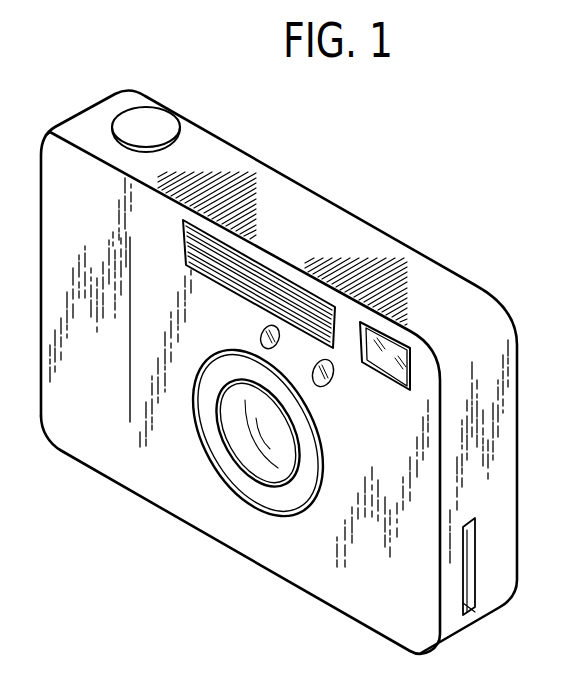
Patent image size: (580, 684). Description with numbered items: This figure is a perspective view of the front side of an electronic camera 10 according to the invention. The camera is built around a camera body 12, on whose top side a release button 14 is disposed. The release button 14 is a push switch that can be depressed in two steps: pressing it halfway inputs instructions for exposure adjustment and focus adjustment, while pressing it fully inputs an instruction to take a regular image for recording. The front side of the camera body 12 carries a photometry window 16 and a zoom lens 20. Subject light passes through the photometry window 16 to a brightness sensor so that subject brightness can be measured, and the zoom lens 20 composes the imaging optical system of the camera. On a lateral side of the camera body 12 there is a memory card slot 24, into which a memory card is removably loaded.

The electronic camera 10 is at (335, 150).
The camera body 12 is at (375, 227).
The release button 14 is at (163, 125).
The photometry window 16 is at (328, 393).
The zoom lens 20 is at (232, 430).
The memory card slot 24 is at (470, 597).